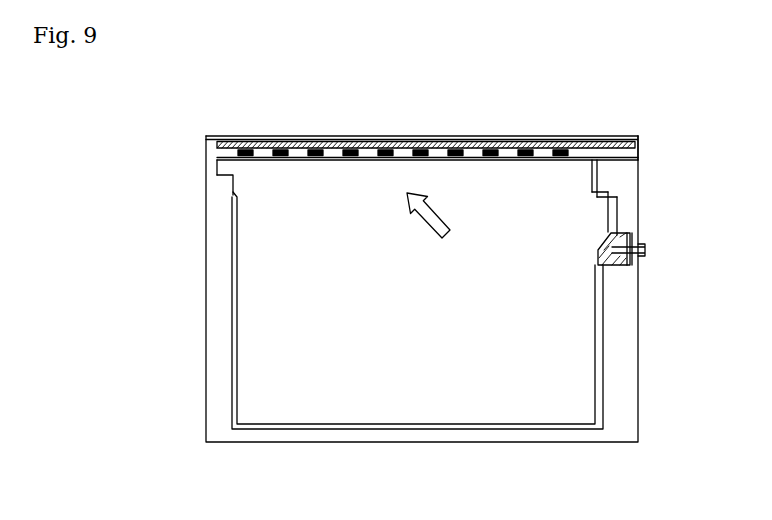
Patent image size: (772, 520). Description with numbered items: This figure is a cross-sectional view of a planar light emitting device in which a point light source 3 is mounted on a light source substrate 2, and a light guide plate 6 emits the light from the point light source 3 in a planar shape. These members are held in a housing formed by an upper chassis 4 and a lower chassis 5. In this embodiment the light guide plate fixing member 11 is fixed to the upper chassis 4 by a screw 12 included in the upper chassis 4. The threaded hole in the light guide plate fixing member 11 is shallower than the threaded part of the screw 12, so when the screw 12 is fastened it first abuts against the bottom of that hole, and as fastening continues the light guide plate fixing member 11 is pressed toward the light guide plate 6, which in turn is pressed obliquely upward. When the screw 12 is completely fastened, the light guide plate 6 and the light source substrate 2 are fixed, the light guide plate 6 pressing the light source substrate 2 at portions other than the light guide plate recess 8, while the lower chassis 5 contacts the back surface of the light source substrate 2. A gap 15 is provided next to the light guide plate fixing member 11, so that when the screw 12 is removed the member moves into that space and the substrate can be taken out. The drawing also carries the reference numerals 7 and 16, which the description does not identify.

The light source substrate 2 is at (641, 142).
The point light source 3 is at (452, 146).
The upper chassis 4 is at (218, 284).
The lower chassis 5 is at (334, 135).
The light guide plate 6 is at (574, 328).
The step portion 7 is at (229, 178).
The light guide plate recess 8 is at (589, 147).
The light guide plate fixing member 11 is at (624, 266).
The screw 12 is at (647, 249).
The gap 15 is at (275, 392).
The light emission direction 16 is at (452, 250).